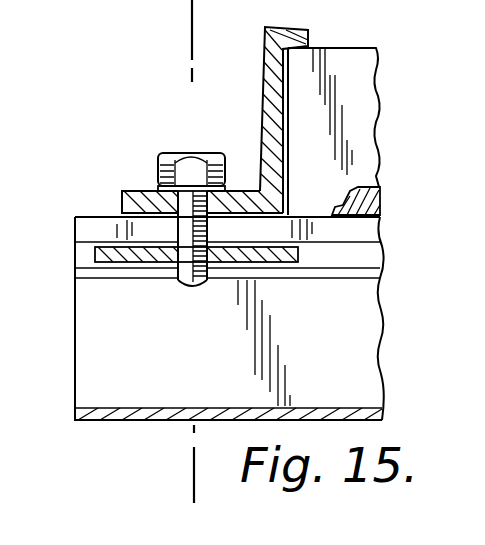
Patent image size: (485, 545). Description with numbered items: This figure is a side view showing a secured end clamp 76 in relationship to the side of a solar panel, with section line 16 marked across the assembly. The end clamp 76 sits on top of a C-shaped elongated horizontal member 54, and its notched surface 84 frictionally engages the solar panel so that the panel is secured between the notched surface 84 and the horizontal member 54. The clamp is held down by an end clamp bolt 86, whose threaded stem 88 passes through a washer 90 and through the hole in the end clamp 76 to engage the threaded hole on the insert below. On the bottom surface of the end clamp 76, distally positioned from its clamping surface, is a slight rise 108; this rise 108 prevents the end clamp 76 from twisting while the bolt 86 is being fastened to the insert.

The section line 16- 16 is at (176, 32).
The horizontal member 54 is at (380, 228).
The end clamp 76 is at (265, 97).
The notched surface 84 is at (325, 48).
The end clamp bolt 86 is at (185, 153).
The threaded stem 88 is at (178, 280).
The washer 90 is at (160, 186).
The rise 108 is at (122, 205).